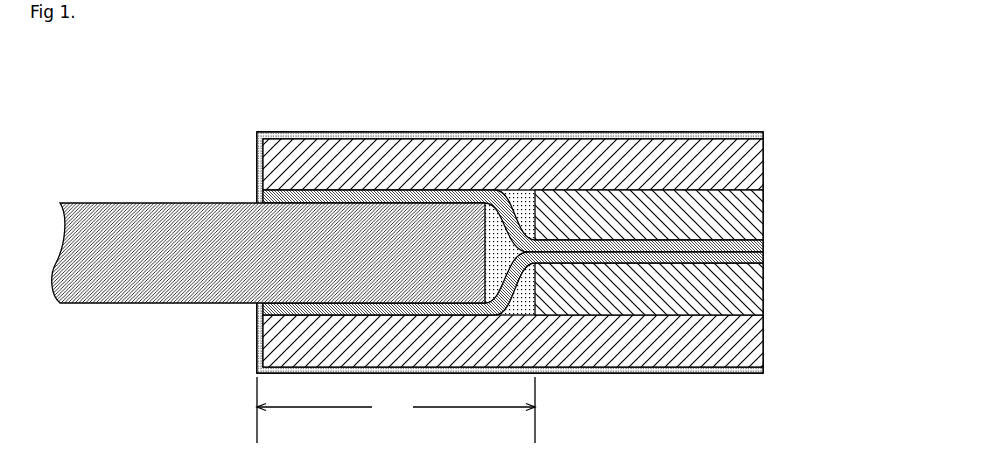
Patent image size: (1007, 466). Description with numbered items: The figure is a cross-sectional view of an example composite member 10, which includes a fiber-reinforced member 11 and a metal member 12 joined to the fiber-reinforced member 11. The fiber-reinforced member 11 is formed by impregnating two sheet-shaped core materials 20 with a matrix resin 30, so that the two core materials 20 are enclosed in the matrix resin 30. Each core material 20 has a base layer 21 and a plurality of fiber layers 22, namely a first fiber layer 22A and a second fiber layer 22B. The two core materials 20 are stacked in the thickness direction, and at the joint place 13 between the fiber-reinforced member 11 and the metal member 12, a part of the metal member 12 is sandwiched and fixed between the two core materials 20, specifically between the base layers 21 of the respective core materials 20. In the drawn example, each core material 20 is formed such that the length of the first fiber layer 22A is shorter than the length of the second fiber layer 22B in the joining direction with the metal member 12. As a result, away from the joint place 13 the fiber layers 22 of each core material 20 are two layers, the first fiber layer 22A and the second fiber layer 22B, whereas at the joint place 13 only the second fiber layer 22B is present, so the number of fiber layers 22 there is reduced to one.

The composite member 10 is at (250, 125).
The fiber-reinforced member 11 is at (590, 121).
The metal member 12 is at (118, 195).
The joint place 13 is at (396, 410).
The core material 20 is at (601, 266).
The base layer 21 is at (575, 252).
The fiber layer 22 is at (575, 266).
The first fiber layer 22A is at (760, 198).
The second fiber layer 22B is at (763, 160).
The matrix resin 30 is at (680, 132).